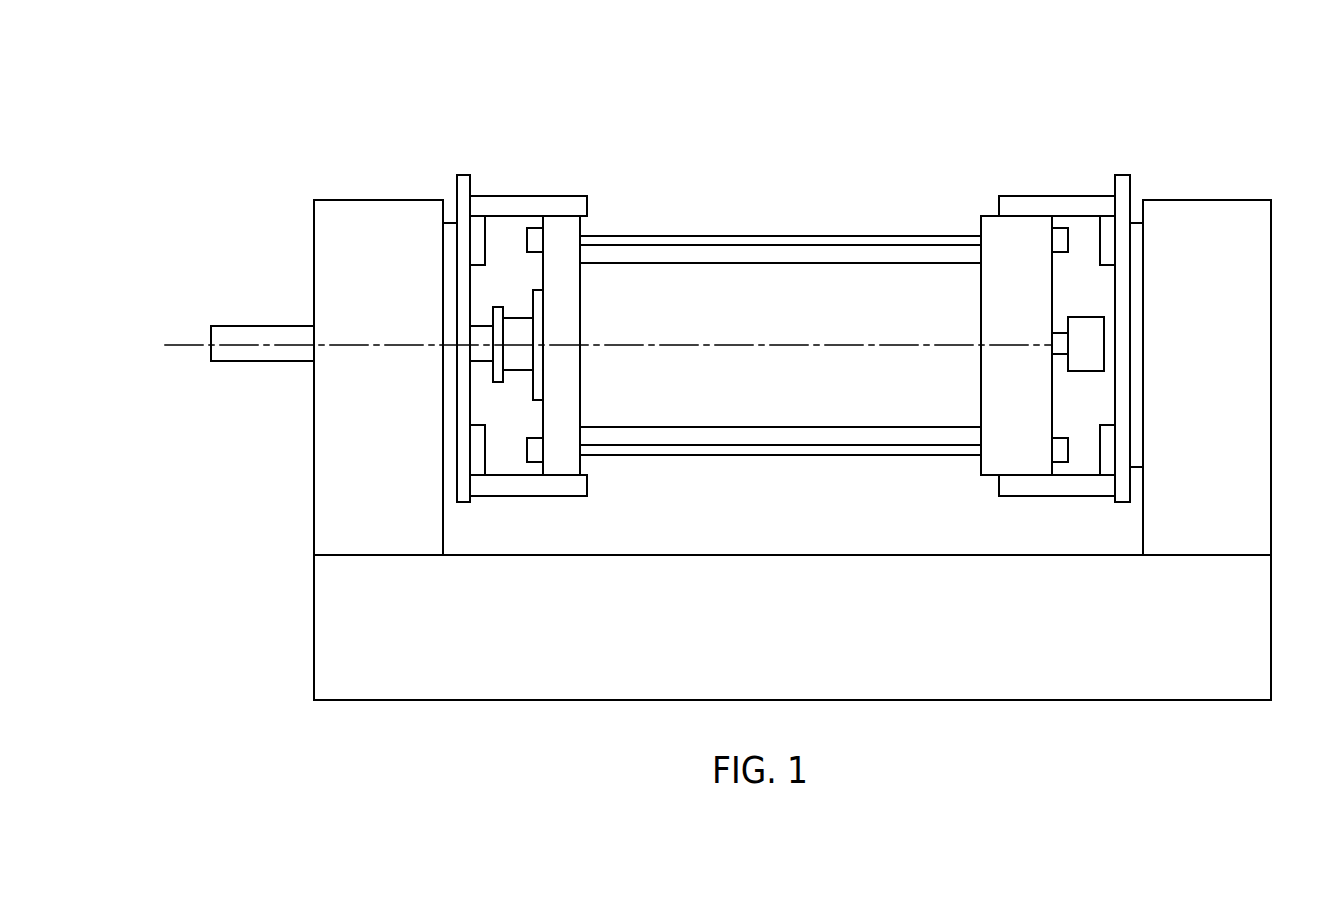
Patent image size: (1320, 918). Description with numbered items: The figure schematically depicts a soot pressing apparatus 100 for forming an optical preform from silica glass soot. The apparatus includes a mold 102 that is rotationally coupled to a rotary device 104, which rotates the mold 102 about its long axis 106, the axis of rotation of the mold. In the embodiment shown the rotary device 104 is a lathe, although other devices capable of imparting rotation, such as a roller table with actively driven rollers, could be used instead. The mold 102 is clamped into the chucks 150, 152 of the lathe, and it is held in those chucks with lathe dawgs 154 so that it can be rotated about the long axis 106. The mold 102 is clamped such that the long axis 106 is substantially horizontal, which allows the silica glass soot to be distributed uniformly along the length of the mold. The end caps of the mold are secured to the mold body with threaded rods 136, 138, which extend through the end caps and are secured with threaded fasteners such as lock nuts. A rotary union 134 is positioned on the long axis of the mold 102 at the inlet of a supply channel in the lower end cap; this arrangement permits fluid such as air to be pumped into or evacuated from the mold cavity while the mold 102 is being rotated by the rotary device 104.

The soot pressing apparatus 100 is at (792, 371).
The mold 102 is at (792, 305).
The rotary device 104 is at (1210, 329).
The long axis 106 is at (185, 345).
The rotary union 134 is at (1087, 327).
The threaded rod 136 is at (727, 455).
The threaded rod 138 is at (725, 236).
The chuck 150 is at (1156, 287).
The chuck 152 is at (421, 296).
The lathe dawgs 154 is at (533, 198).